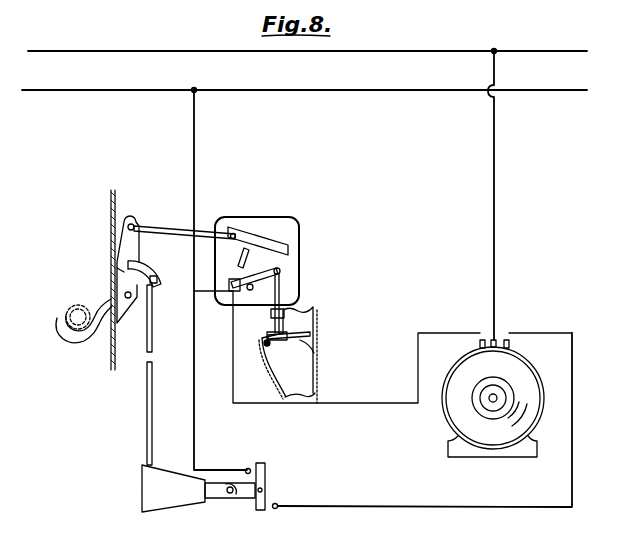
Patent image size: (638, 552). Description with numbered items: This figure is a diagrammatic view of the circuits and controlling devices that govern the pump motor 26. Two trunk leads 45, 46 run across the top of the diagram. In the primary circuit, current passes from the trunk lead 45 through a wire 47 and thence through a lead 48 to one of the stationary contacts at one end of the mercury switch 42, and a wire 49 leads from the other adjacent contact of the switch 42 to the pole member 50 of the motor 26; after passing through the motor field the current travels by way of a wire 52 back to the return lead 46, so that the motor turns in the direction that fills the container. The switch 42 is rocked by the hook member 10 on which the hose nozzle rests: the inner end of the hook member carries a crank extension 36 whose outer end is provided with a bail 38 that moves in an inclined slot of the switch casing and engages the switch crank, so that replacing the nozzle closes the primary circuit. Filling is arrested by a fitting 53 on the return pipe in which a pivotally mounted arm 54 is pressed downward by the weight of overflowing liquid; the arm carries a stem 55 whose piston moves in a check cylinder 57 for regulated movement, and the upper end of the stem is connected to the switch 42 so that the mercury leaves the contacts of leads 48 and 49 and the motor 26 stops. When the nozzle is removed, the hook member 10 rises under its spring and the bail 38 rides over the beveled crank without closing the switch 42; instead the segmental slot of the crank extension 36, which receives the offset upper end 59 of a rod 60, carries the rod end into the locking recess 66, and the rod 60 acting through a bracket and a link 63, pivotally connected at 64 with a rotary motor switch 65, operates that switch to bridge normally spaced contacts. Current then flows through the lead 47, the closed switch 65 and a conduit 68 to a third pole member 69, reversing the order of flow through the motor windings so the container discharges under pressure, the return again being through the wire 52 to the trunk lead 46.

The hook member 10 is at (89, 334).
The motor 26 is at (461, 415).
The crank extension 36 is at (138, 248).
The bail 38 is at (172, 231).
The mercury switch 42 is at (239, 269).
The trunk lead 45 is at (134, 90).
The return lead 46 is at (191, 41).
The wire 47 is at (196, 167).
The lead 48 is at (204, 296).
The wire 49 is at (234, 380).
The pole member 50 is at (479, 347).
The wire 52 is at (496, 216).
The fitting 53 is at (313, 341).
The pivotally mounted arm 54 is at (316, 353).
The stem 55 is at (285, 291).
The check cylinder 57 is at (497, 340).
The offset upper end 59 is at (170, 270).
The rod 60 is at (153, 331).
The link 63 is at (215, 495).
The pivotal connection 64 is at (232, 496).
The rotary motor switch 65 is at (266, 476).
The locking recess 66 is at (120, 273).
The conduit 68 is at (386, 507).
The third pole member 69 is at (511, 347).